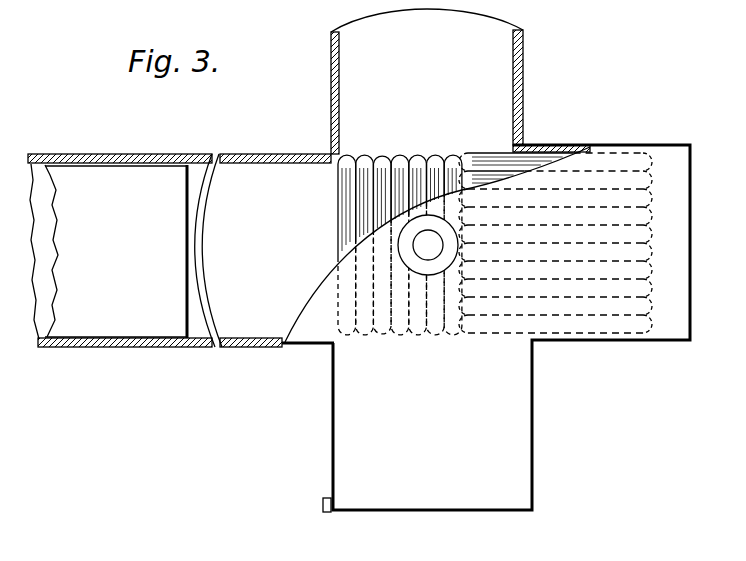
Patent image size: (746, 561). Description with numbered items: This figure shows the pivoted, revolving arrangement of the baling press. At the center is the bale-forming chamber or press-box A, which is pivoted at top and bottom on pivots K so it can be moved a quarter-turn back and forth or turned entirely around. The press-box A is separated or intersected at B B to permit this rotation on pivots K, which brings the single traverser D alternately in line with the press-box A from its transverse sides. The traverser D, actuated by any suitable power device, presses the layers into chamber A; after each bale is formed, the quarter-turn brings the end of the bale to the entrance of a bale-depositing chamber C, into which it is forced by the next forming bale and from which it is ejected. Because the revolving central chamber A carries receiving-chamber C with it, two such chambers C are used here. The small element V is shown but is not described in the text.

The bale-forming chamber A is at (275, 178).
The intersection of press-box B is at (214, 152).
The bale-depositing chamber C is at (605, 341).
The traverser D is at (109, 251).
The pivots K is at (428, 245).
The vent V is at (320, 519).